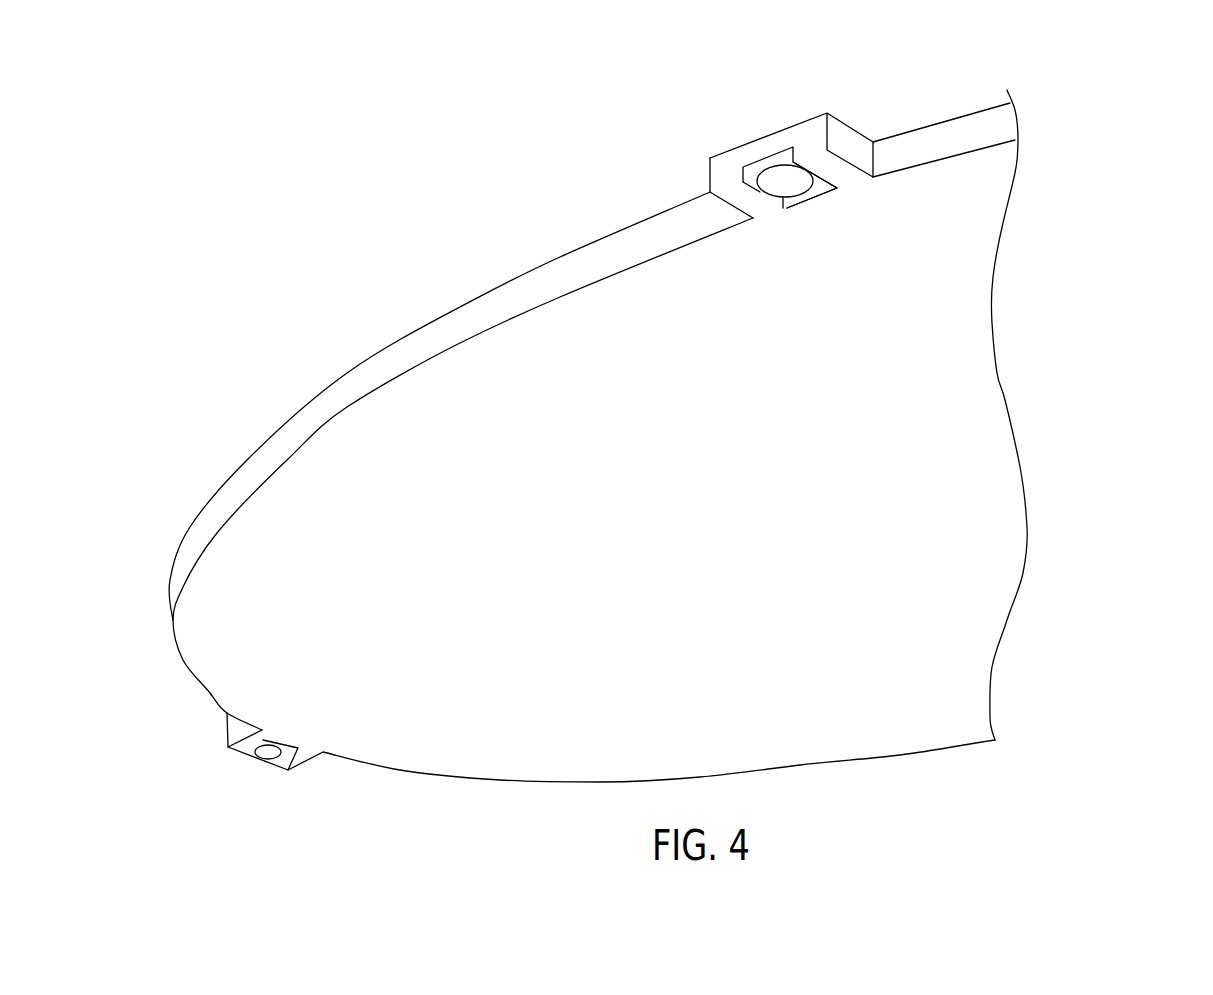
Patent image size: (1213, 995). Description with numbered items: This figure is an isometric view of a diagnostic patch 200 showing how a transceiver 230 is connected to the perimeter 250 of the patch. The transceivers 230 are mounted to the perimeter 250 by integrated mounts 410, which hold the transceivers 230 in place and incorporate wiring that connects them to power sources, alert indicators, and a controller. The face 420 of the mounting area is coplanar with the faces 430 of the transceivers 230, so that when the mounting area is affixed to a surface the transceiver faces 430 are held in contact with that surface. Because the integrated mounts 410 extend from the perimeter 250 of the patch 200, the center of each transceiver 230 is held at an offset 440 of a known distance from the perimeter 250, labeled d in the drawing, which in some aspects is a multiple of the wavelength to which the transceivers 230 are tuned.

The diagnostic patch 200 is at (669, 419).
The transceiver 230 is at (772, 177).
The perimeter 250 is at (367, 387).
The integrated mount 410 is at (848, 143).
The face of the mounting area 420 is at (862, 263).
The transceiver face 430 is at (780, 175).
The offset 440 is at (777, 203).
The distance d is at (788, 182).